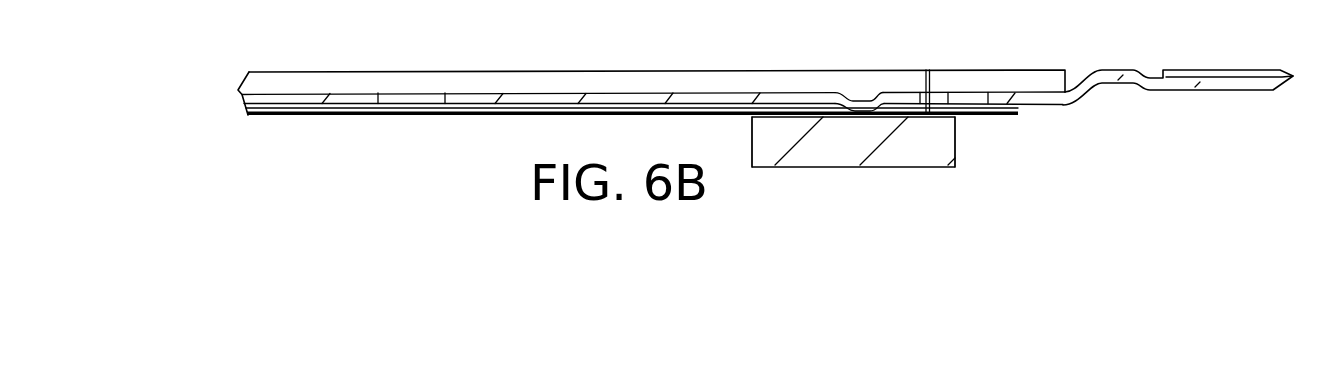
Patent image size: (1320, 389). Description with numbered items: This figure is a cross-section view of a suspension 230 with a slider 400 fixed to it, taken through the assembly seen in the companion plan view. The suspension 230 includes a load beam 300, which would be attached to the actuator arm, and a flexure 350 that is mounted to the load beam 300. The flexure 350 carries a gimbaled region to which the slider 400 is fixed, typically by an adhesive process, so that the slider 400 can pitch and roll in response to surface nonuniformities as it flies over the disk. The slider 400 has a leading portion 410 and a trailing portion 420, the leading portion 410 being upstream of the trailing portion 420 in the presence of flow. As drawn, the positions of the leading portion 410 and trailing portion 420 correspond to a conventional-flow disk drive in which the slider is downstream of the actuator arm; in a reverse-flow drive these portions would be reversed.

The suspension 230 is at (641, 57).
The load beam 300 is at (767, 77).
The flexure 350 is at (632, 139).
The slider 400 is at (853, 165).
The leading portion 410 is at (694, 141).
The trailing portion 420 is at (1046, 140).